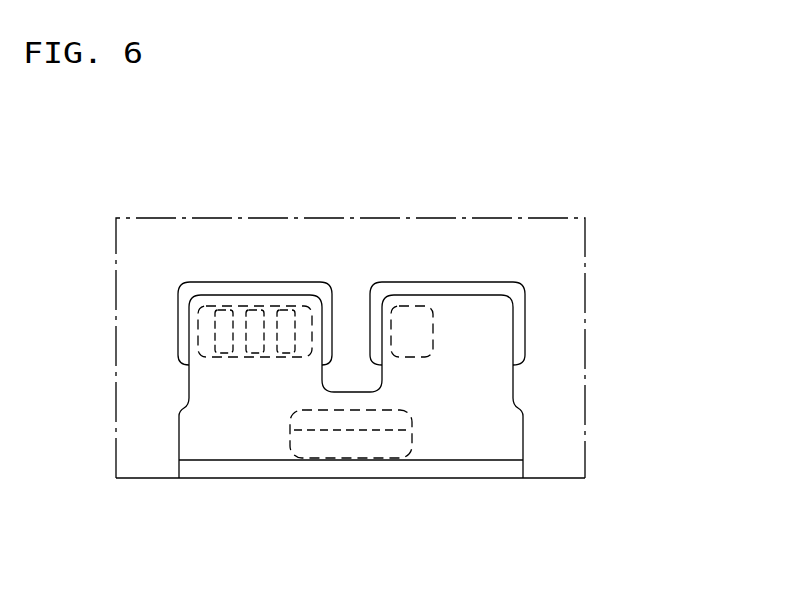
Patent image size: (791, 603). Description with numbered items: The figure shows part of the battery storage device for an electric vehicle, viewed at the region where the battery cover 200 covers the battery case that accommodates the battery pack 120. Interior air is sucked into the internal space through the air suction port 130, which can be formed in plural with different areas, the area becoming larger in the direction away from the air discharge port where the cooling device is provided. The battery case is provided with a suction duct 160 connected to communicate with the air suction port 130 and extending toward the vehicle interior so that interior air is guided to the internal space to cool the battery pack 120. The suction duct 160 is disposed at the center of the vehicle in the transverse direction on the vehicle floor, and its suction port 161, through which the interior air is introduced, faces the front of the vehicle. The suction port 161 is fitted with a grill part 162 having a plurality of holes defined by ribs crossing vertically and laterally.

The battery pack 120 is at (226, 308).
The air suction port 130 is at (272, 305).
The suction duct 160 is at (493, 390).
The suction port 161 is at (360, 447).
The grill part 162 is at (241, 470).
The battery cover 200 is at (358, 267).